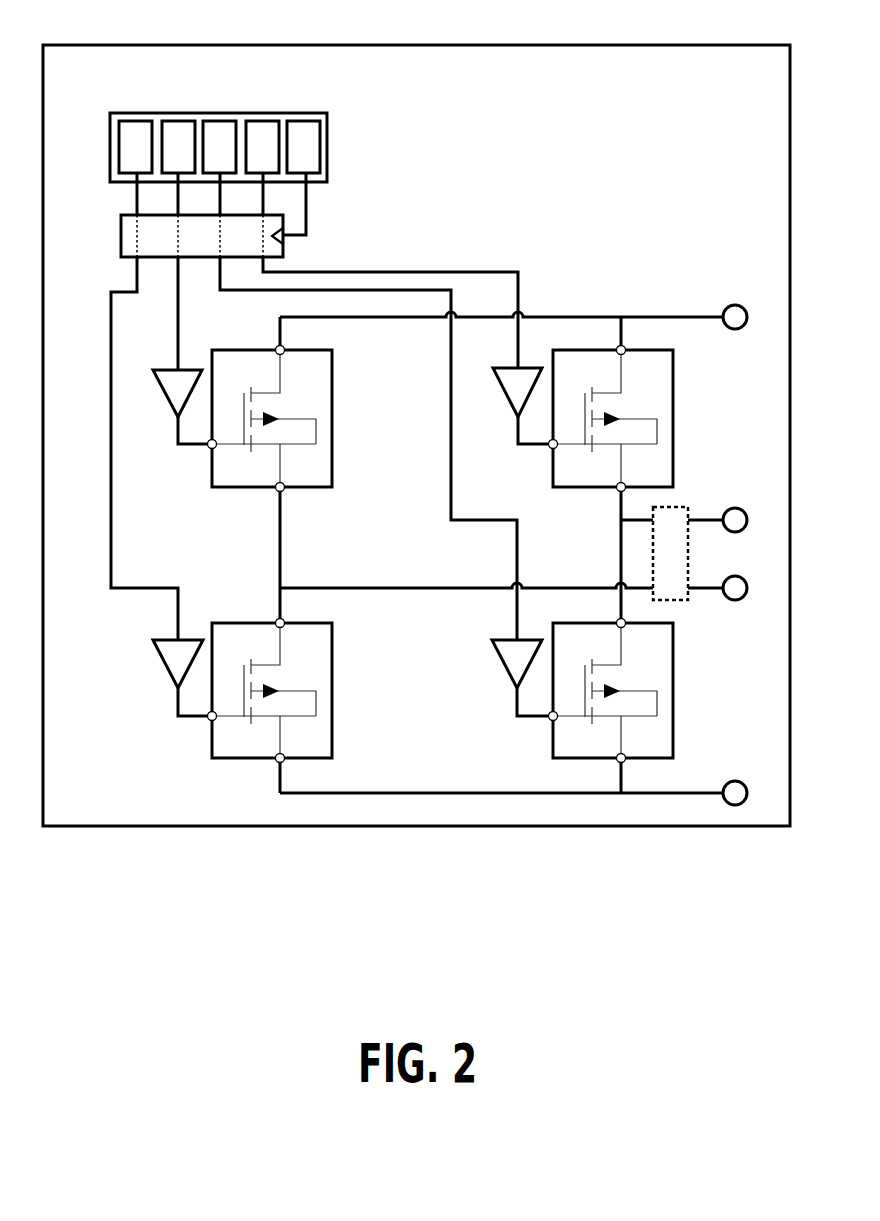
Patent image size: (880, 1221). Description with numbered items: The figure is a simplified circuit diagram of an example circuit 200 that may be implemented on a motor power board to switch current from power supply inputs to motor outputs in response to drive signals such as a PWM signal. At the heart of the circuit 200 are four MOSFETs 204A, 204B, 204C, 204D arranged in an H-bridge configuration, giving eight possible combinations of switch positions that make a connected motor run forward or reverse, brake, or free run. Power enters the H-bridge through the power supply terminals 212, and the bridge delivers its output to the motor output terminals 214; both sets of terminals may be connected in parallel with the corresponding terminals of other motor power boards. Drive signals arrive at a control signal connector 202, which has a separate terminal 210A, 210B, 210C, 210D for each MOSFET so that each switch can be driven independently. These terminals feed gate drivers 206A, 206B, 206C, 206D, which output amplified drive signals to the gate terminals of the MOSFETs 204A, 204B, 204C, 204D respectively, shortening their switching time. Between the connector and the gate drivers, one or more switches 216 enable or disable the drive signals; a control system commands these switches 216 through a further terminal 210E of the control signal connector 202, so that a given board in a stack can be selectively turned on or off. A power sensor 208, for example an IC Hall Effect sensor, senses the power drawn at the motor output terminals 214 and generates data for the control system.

The circuit 200 is at (113, 45).
The control signal connector 202 is at (110, 170).
The terminal 210A is at (120, 118).
The terminal 210B is at (184, 118).
The terminal 210C is at (208, 118).
The terminal 210D is at (272, 118).
The terminal 210E is at (327, 160).
The switches 216 is at (121, 235).
The gate driver 206A is at (162, 370).
The gate driver 206B is at (502, 370).
The gate driver 206C is at (162, 640).
The gate driver 206D is at (502, 640).
The MOSFET 204A is at (333, 385).
The MOSFET 204B is at (673, 385).
The MOSFET 204C is at (333, 655).
The MOSFET 204D is at (673, 655).
The power sensor 208 is at (678, 507).
The power supply terminals 212 is at (744, 307).
The motor output terminals 214 is at (744, 510).